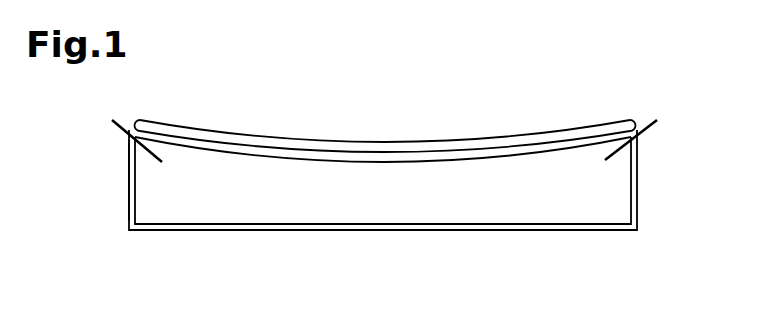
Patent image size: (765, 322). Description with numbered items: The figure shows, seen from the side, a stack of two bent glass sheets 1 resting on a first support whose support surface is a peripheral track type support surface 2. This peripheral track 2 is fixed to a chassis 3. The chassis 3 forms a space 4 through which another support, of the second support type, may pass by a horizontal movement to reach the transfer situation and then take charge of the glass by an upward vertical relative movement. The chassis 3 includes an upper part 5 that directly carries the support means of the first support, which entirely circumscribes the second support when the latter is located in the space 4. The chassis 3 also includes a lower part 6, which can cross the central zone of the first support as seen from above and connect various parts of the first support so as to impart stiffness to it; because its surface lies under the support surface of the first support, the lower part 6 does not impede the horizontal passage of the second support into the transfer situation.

The bent glass sheets 1 is at (266, 136).
The peripheral track type support surface 2 is at (121, 128).
The chassis 3 is at (223, 232).
The space 4 is at (369, 204).
The upper part 5 is at (128, 186).
The lower part 6 is at (486, 231).